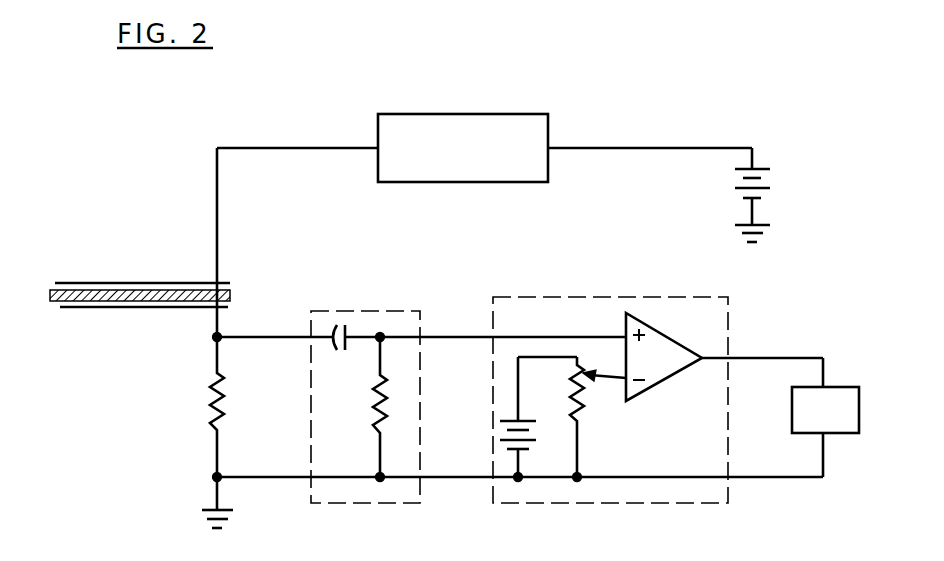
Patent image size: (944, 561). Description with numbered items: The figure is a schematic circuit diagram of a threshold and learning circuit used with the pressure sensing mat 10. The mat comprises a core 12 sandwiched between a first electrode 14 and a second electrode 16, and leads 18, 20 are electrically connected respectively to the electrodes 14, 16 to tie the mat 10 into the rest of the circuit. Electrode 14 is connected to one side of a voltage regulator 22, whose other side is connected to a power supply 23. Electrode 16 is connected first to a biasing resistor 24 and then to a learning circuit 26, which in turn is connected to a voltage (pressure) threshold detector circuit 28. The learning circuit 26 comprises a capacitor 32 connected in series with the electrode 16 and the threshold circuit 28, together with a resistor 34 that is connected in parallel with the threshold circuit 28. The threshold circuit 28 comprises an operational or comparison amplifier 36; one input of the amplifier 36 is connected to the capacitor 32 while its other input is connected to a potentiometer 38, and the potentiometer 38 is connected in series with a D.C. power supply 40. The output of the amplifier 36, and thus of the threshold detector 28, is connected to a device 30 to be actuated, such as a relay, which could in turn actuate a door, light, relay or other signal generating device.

The pressure sensing mat 10 is at (154, 305).
The core 12 is at (231, 297).
The first electrode 14 is at (110, 283).
The second electrode 16 is at (152, 308).
The lead 18 is at (218, 222).
The lead 20 is at (222, 331).
The voltage regulator 22 is at (452, 162).
The power supply 23 is at (771, 186).
The biasing resistor 24 is at (222, 397).
The learning circuit 26 is at (368, 310).
The voltage threshold detector circuit 28 is at (593, 297).
The device 30 is at (814, 422).
The capacitor 32 is at (348, 346).
The resistor 34 is at (375, 405).
The operational or comparison amplifier 36 is at (644, 369).
The potentiometer 38 is at (589, 405).
The D.C. power supply 40 is at (562, 412).